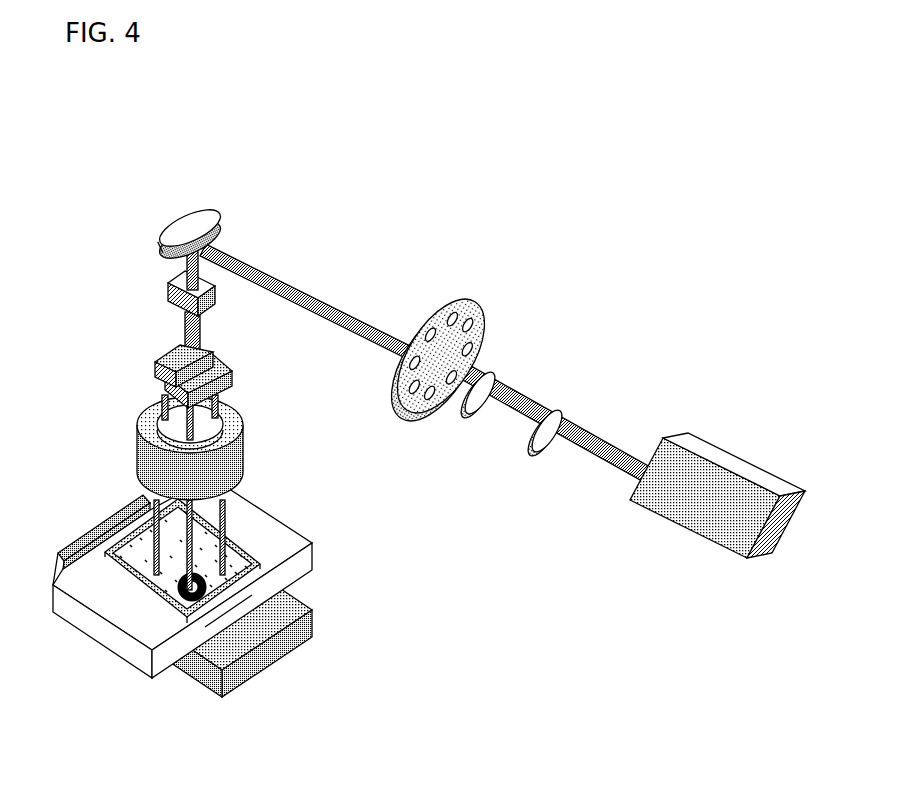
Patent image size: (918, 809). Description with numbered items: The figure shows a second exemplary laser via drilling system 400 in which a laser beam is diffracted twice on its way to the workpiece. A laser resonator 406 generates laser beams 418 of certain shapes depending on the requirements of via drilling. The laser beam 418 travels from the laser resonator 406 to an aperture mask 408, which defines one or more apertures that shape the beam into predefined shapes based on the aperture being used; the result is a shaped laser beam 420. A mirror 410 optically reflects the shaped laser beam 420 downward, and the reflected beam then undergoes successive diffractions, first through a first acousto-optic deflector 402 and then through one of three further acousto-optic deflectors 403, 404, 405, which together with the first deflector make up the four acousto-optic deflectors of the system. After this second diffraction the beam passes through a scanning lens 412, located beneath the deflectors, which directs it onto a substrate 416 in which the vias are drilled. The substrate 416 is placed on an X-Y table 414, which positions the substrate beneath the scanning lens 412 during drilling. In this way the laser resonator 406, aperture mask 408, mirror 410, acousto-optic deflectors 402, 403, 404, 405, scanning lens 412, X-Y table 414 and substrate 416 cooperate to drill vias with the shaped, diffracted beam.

The second exemplary laser via drilling system 400 is at (432, 127).
The first acousto-optic deflector 402 is at (166, 294).
The acousto-optic deflector 403 is at (156, 360).
The acousto-optic deflector 404 is at (214, 343).
The acousto-optic deflector 405 is at (222, 382).
The laser resonator 406 is at (757, 465).
The aperture mask 408 is at (481, 304).
The mirror 410 is at (218, 212).
The scanning lens 412 is at (243, 469).
The X-Y table 414 is at (313, 543).
The substrate 416 is at (280, 570).
The laser beam 418 is at (605, 447).
The shaped laser beam 420 is at (330, 303).